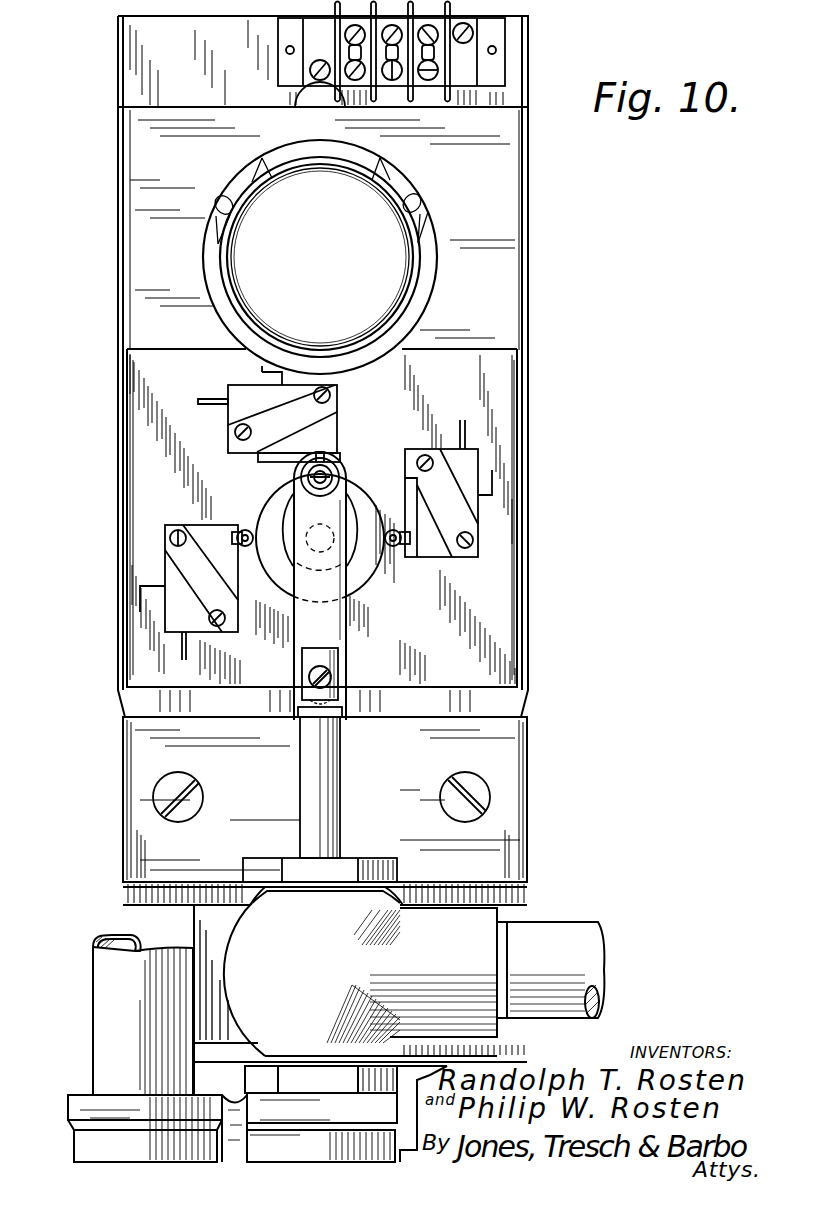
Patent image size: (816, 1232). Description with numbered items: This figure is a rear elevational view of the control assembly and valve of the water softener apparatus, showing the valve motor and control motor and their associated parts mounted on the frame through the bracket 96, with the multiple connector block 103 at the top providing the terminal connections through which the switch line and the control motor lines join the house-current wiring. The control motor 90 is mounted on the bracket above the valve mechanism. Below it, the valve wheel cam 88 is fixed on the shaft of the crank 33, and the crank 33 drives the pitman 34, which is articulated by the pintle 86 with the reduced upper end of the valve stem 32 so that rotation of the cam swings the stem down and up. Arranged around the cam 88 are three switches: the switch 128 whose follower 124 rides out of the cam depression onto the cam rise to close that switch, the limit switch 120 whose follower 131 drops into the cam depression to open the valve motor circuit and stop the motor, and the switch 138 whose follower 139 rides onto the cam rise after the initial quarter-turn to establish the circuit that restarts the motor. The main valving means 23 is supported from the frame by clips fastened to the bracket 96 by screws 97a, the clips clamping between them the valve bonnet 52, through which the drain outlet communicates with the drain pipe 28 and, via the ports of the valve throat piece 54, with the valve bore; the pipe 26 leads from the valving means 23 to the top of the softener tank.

The multiple connector block 103 is at (477, 16).
The control motor 90 is at (403, 255).
The switch 128 is at (337, 418).
The crank 33 is at (353, 498).
The follower 124 is at (298, 470).
The switch 120 is at (165, 528).
The follower 131 is at (245, 530).
The follower 139 is at (393, 548).
The switch 138 is at (445, 557).
The valve wheel cam 88 is at (360, 592).
The pitman 34 is at (340, 628).
The pintle 86 is at (333, 680).
The valve stem 32 is at (340, 776).
The screws 97a is at (462, 778).
The bracket 96 is at (519, 614).
The drain pipe 28 is at (570, 930).
The valve bonnet 52 is at (232, 944).
The pipe 26 is at (100, 995).
The main valving means 23 is at (77, 1143).
The valve throat piece 54 is at (318, 1080).